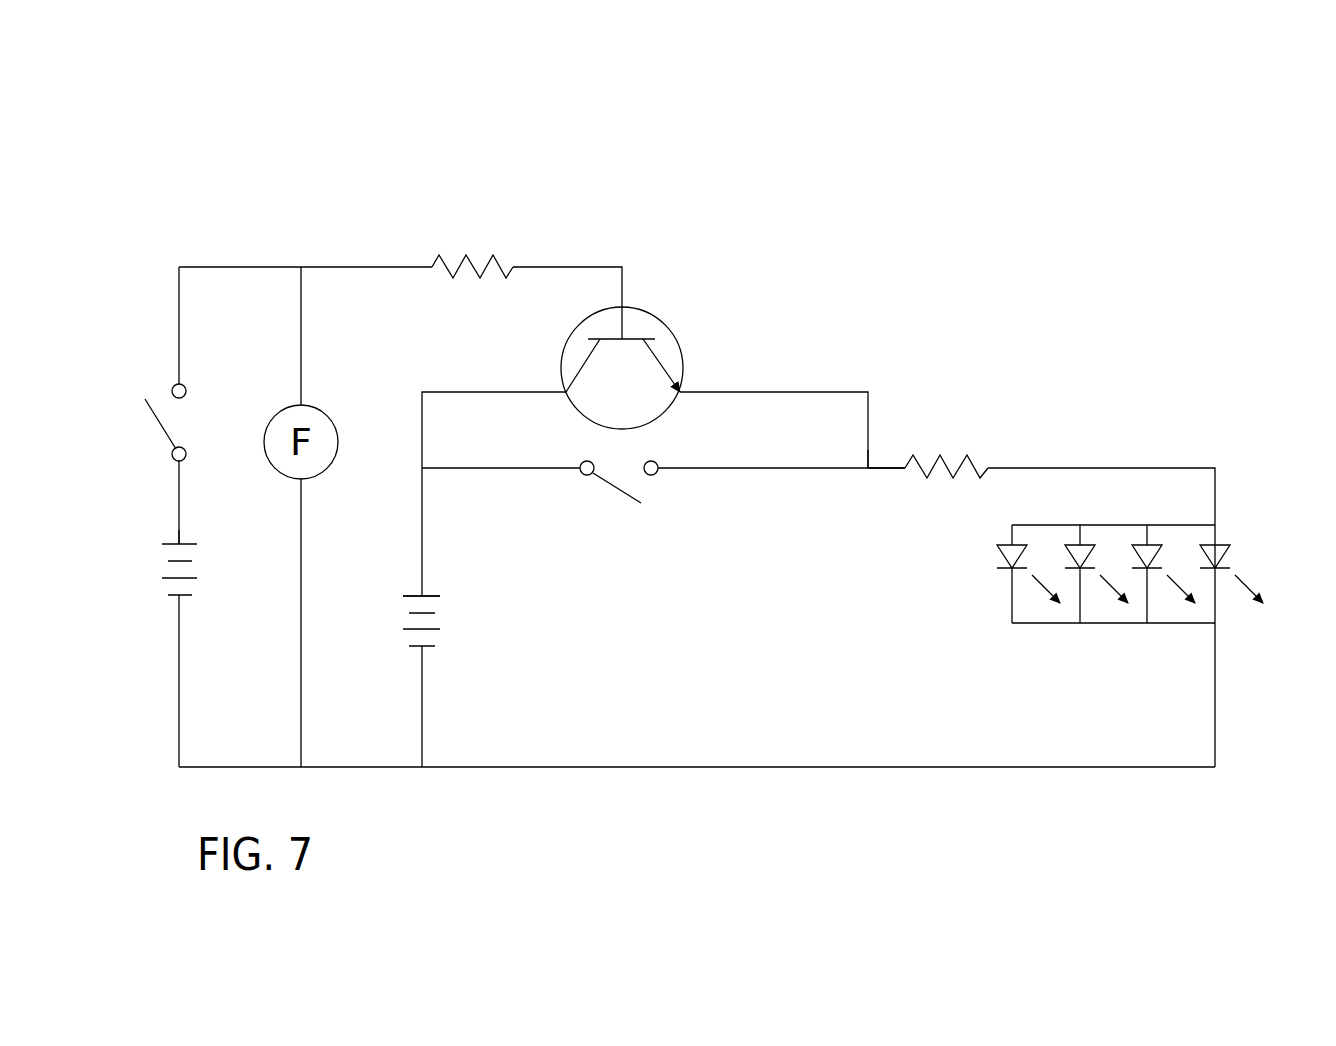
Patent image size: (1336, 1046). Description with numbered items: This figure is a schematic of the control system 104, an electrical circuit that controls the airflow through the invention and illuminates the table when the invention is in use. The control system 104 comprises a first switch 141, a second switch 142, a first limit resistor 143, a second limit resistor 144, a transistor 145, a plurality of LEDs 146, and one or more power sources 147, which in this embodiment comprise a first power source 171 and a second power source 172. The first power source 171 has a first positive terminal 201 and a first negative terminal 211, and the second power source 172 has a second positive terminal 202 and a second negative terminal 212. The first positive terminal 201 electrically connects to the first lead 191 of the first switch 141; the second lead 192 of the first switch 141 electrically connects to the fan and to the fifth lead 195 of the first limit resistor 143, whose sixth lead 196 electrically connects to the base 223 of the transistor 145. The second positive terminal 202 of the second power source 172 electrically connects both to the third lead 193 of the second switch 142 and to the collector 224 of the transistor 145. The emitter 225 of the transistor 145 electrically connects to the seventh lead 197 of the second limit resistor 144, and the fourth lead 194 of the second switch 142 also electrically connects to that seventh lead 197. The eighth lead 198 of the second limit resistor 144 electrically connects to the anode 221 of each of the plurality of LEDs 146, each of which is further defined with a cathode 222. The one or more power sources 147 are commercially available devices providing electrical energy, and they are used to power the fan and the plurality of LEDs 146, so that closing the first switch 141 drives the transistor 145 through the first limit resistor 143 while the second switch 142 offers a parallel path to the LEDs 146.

The control system 104 is at (185, 145).
The first switch 141 is at (152, 426).
The second switch 142 is at (624, 492).
The first limit resistor 143 is at (484, 265).
The second limit resistor 144 is at (948, 468).
The transistor 145 is at (617, 322).
The plurality of LEDs 146 is at (1132, 555).
The one or more power sources 147 is at (410, 596).
The first power source 171 is at (172, 594).
The second power source 172 is at (440, 630).
The first lead 191 is at (180, 483).
The second lead 192 is at (180, 339).
The third lead 193 is at (557, 470).
The fourth lead 194 is at (679, 468).
The fifth lead 195 is at (375, 267).
The sixth lead 196 is at (575, 267).
The seventh lead 197 is at (890, 468).
The eighth lead 198 is at (1017, 468).
The first positive terminal 201 is at (180, 513).
The second positive terminal 202 is at (431, 596).
The first negative terminal 211 is at (180, 632).
The second negative terminal 212 is at (425, 648).
The anode 221 is at (1215, 527).
The cathode 222 is at (965, 625).
The base 223 is at (628, 305).
The collector 224 is at (585, 370).
The emitter 225 is at (680, 355).